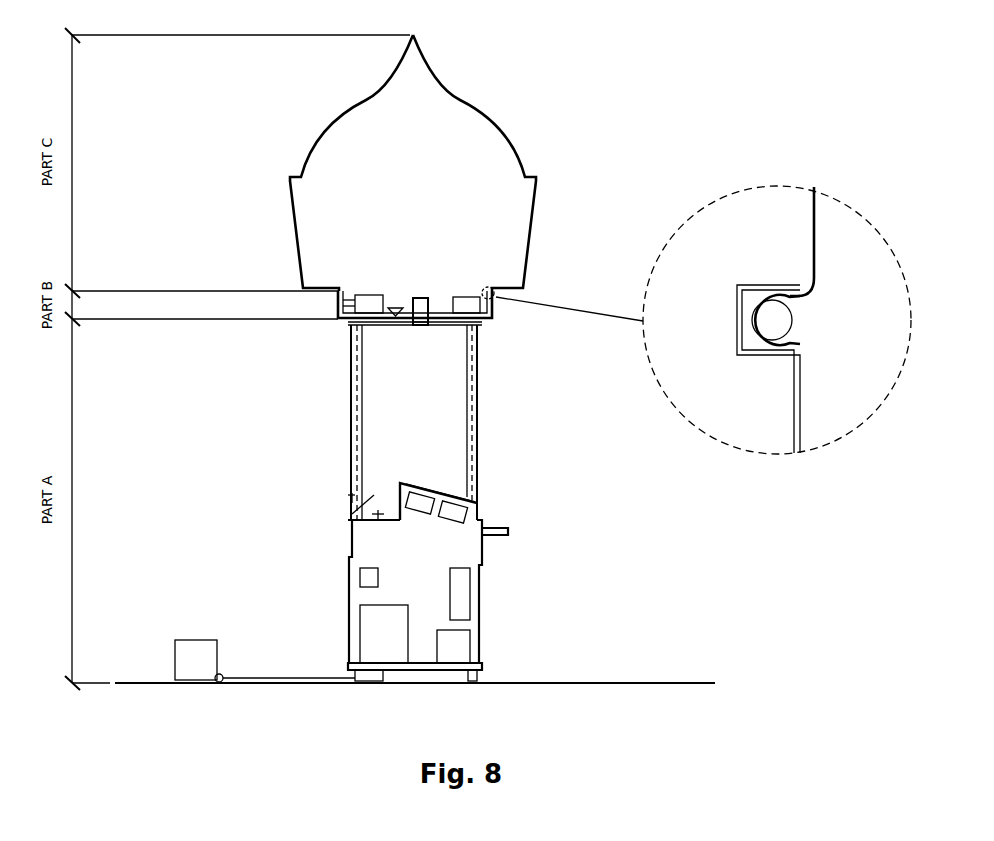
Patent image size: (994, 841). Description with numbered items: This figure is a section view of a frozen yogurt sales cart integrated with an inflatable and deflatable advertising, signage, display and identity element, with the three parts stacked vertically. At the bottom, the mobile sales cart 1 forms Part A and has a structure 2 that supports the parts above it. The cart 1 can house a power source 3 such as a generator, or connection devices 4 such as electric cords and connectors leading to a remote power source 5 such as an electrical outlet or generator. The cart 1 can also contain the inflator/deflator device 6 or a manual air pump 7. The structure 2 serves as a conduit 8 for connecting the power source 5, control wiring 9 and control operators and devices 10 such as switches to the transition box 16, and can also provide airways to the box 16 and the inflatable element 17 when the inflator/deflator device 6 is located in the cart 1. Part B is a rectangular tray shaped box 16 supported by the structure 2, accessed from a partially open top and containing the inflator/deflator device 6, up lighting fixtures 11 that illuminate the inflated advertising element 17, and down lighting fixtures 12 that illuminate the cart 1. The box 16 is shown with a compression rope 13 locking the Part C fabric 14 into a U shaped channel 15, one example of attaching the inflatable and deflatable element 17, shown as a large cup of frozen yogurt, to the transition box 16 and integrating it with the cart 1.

The mobile sales cart 1 is at (390, 594).
The structure 2 is at (421, 405).
The power source 3 is at (340, 633).
The connection devices 4 is at (296, 619).
The remote power source 5 is at (169, 630).
The inflator/deflator device 6 is at (409, 423).
The manual air pump 7 is at (503, 639).
The conduit 8 is at (421, 422).
The control wiring 9 is at (519, 397).
The control operators and devices 10 is at (412, 480).
The up lighting fixtures 11 is at (317, 255).
The down lighting fixtures 12 is at (500, 233).
The compression rope 13 is at (809, 326).
The Part C fabric 14 is at (552, 165).
The U shaped channel 15 is at (734, 369).
The rectangular tray shaped box 16 is at (352, 339).
The inflatable and deflatable advertising/signage/display/identity element 17 is at (323, 158).